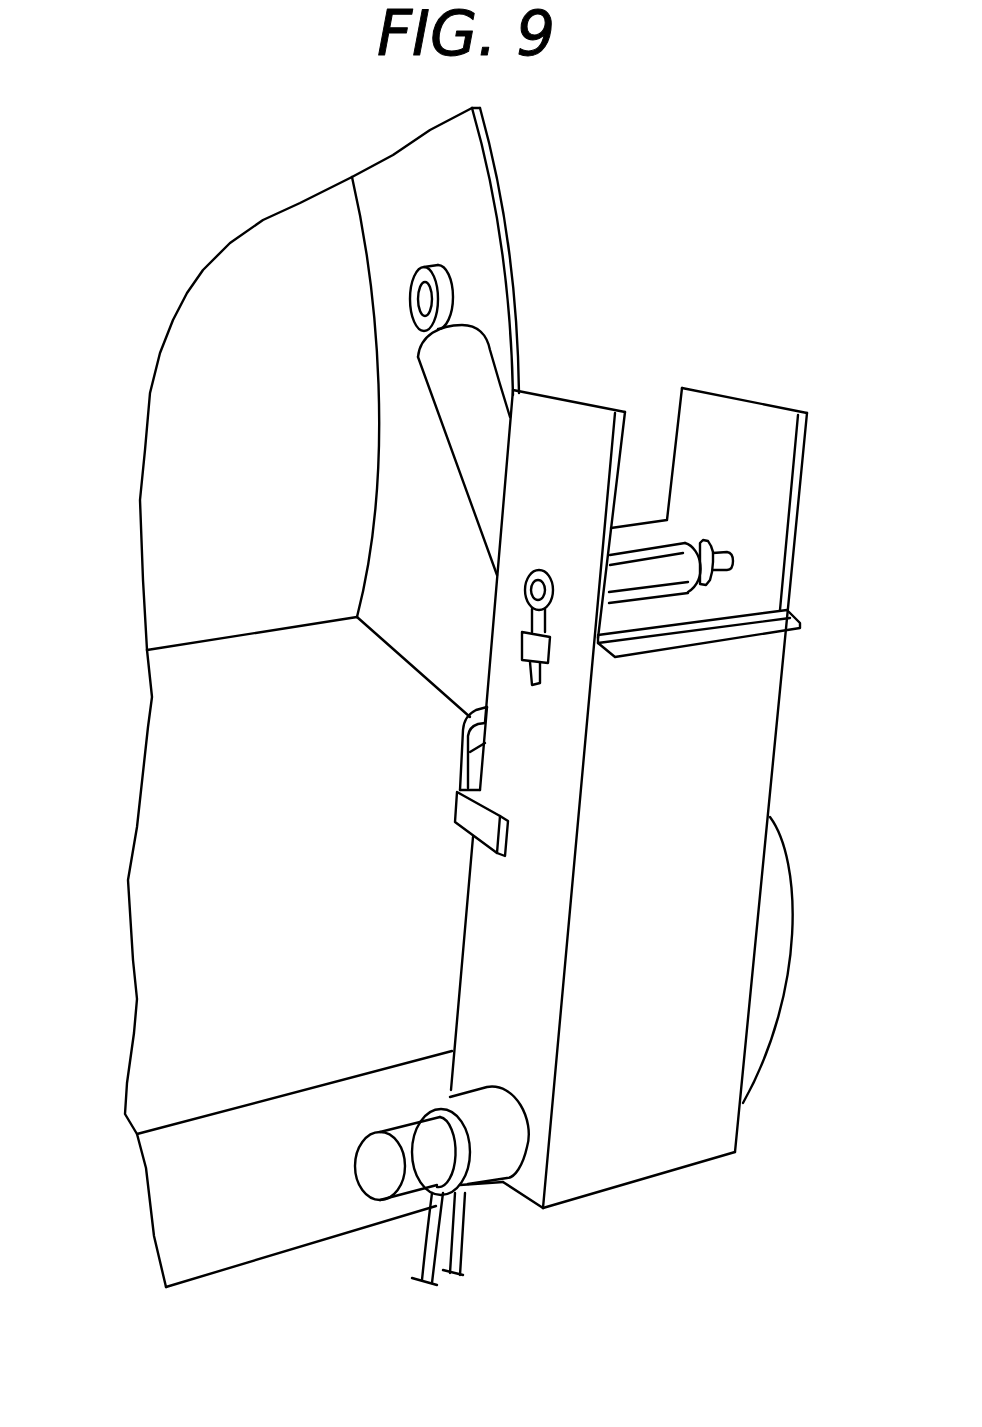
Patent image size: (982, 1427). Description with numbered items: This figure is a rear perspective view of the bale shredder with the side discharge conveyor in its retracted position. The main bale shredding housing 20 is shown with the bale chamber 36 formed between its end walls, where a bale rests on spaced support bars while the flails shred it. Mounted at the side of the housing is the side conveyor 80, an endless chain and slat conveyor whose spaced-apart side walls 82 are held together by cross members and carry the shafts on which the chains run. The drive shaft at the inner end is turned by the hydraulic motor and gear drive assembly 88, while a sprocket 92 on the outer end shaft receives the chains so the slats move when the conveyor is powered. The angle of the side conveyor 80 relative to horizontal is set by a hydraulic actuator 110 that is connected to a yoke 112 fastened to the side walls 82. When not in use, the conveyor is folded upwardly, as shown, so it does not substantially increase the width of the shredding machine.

The main bale shredding housing 20 is at (167, 931).
The bale chamber 36 is at (182, 553).
The side conveyor 80 is at (652, 1180).
The side walls 82 is at (537, 890).
The hydraulic motor and gear drive assembly 88 is at (423, 1137).
The sprocket 92 is at (707, 540).
The hydraulic actuator 110 is at (458, 369).
The yoke 112 is at (462, 763).